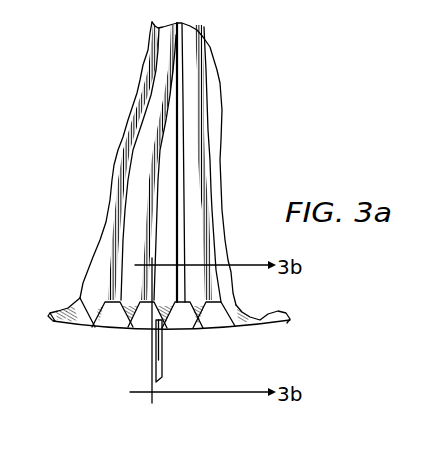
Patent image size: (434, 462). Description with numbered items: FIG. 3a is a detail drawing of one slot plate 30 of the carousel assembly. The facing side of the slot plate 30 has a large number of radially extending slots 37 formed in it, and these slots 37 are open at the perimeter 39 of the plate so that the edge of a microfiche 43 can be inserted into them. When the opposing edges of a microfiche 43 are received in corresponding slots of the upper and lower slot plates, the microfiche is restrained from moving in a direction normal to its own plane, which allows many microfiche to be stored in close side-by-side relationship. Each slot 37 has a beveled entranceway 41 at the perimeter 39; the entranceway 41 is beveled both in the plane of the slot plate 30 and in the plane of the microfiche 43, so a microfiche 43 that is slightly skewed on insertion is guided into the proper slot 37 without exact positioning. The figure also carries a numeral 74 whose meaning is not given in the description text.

The slot plate 30 is at (261, 322).
The slot 37 is at (206, 148).
The perimeter 39 is at (75, 327).
The beveled entranceway 41 is at (140, 326).
The microfiche 43 is at (162, 355).
The rib groove 74 is at (152, 172).